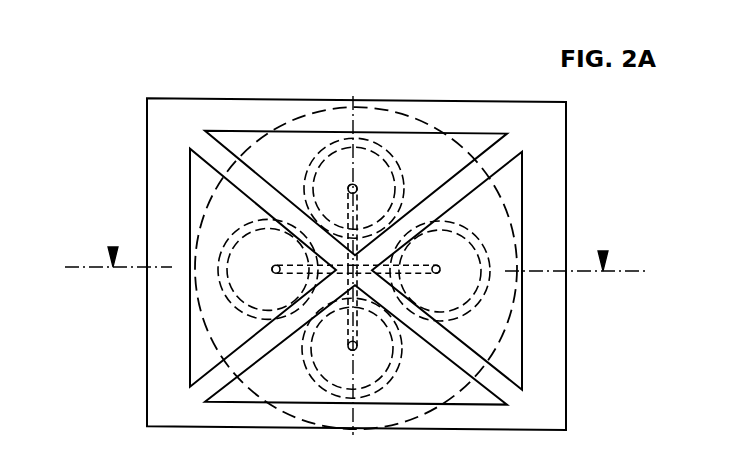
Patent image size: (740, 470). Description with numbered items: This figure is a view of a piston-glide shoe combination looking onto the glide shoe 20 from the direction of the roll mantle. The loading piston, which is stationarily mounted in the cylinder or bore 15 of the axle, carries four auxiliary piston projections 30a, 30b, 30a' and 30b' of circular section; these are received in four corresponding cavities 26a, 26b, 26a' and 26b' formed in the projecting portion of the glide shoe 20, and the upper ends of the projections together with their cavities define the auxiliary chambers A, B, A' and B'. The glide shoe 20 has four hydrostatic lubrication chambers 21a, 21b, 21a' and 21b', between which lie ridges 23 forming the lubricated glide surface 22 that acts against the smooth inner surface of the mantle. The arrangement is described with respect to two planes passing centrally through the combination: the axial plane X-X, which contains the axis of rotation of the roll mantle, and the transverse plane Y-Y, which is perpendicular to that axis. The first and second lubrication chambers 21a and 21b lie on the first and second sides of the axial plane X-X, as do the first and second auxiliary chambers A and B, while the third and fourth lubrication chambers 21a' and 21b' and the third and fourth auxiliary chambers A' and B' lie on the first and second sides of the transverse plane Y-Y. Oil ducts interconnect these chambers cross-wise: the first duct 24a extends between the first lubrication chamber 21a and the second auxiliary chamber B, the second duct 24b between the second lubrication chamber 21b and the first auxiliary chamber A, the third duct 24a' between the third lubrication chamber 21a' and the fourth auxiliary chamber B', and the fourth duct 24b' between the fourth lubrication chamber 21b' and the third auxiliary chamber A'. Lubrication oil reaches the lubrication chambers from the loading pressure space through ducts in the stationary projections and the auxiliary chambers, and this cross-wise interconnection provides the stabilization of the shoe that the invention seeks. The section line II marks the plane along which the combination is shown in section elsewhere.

The cylinder or bore 15 is at (505, 282).
The glide shoe 20 is at (552, 232).
The lubricated glide surface 22 is at (545, 403).
The ridges 23 is at (221, 150).
The first lubrication chamber 21a is at (166, 308).
The second lubrication chamber 21b is at (555, 342).
The third lubrication chamber 21a' is at (159, 132).
The fourth lubrication chamber 21b' is at (177, 386).
The first duct 24a is at (207, 211).
The second duct 24b is at (288, 220).
The third duct 24a' is at (499, 207).
The fourth duct 24b' is at (462, 255).
The cavity 26a is at (200, 291).
The cavity 26b is at (510, 308).
The cavity 26a' is at (330, 143).
The cavity 26b' is at (320, 381).
The auxiliary piston projection 30a is at (205, 299).
The auxiliary piston projection 30b is at (506, 279).
The auxiliary piston projection 30a' is at (367, 148).
The auxiliary piston projection 30b' is at (375, 376).
The first auxiliary chamber A is at (188, 227).
The second auxiliary chamber B is at (519, 221).
The third auxiliary chamber A' is at (343, 125).
The fourth auxiliary chamber B' is at (336, 398).
The axial plane X- X is at (361, 264).
The transverse plane Y- Y is at (354, 270).
The section line II is at (358, 245).